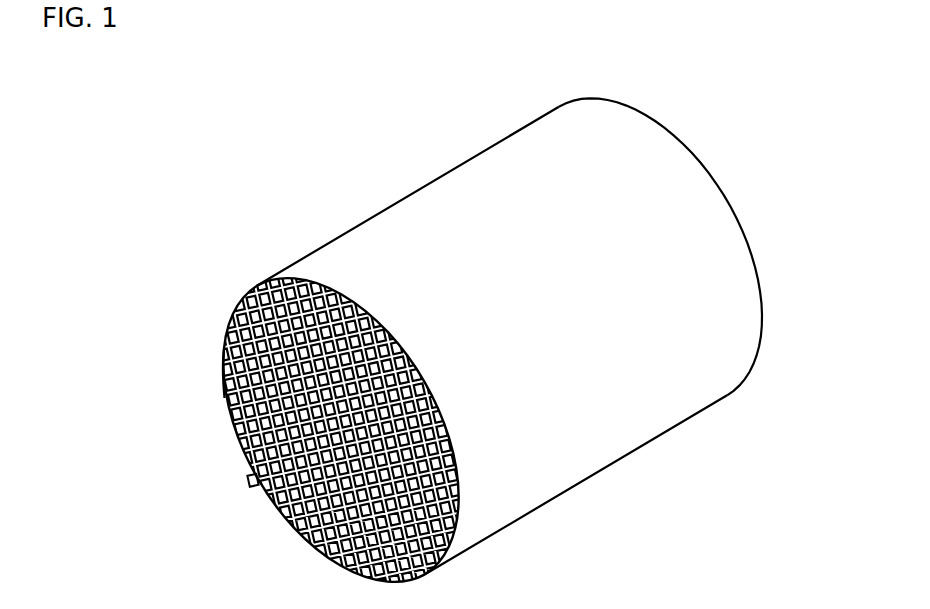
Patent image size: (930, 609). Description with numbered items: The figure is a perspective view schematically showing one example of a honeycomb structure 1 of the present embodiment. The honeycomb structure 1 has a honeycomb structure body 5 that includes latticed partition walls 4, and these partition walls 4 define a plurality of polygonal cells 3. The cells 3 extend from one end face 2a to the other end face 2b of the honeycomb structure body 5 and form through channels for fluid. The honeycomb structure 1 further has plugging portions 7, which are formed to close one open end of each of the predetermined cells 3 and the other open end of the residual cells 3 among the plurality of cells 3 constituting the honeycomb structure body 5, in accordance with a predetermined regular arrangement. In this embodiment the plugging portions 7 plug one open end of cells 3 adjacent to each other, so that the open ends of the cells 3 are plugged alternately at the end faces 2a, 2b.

The honeycomb structure 1 is at (233, 188).
The one end face 2a is at (225, 343).
The other end face 2b is at (762, 286).
The polygonal cells 3 is at (238, 424).
The partition walls 4 is at (253, 473).
The honeycomb structure body 5 is at (172, 355).
The plugging portions 7 is at (223, 387).